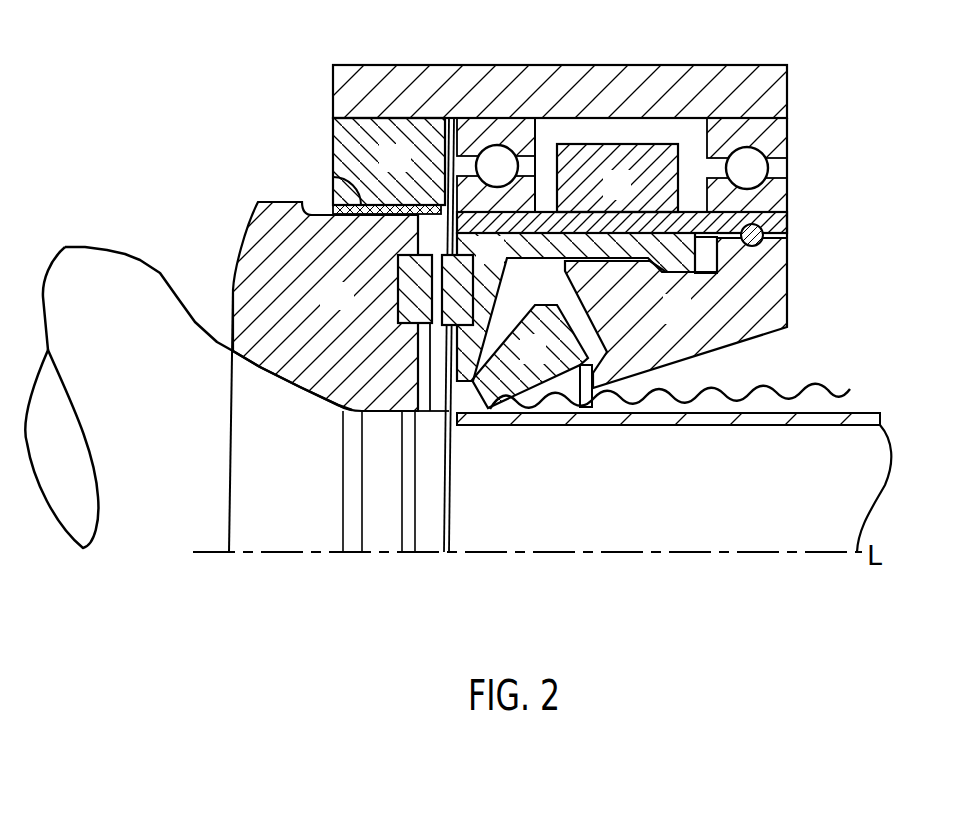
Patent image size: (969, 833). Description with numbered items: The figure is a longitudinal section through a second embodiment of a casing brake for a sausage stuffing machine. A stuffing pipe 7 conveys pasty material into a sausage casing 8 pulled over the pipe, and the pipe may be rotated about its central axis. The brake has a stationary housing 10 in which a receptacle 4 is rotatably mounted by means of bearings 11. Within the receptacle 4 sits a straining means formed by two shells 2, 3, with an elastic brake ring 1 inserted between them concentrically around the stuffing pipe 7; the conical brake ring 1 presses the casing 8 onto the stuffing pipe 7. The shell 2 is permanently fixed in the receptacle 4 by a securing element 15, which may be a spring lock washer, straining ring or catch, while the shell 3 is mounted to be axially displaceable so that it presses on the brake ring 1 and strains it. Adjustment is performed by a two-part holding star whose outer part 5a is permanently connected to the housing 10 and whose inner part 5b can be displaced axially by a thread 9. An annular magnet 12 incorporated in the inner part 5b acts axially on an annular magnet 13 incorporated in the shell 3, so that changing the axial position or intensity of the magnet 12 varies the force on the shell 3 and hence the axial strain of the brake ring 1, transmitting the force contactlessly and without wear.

The brake ring 1 is at (525, 365).
The shell 2 is at (669, 325).
The shell 3 is at (481, 264).
The receptacle 4 is at (609, 200).
The outer part 5a is at (408, 174).
The inner part 5b is at (322, 309).
The stuffing pipe 7 is at (827, 530).
The sausage casing 8 is at (841, 396).
The thread 9 is at (332, 175).
The housing 10 is at (621, 80).
The bearings 11 is at (497, 143).
The annular magnet 12 is at (397, 307).
The annular magnet 13 is at (450, 325).
The securing element 15 is at (764, 240).